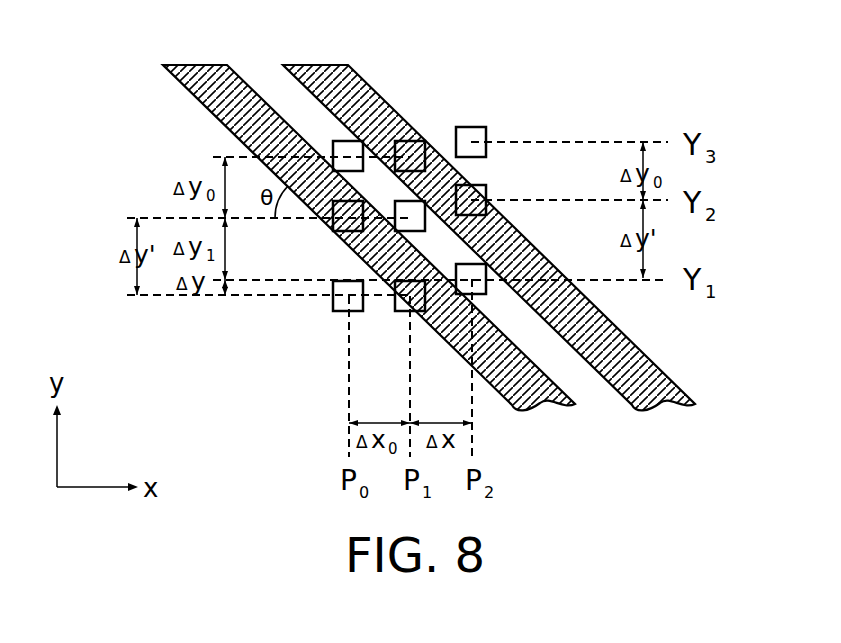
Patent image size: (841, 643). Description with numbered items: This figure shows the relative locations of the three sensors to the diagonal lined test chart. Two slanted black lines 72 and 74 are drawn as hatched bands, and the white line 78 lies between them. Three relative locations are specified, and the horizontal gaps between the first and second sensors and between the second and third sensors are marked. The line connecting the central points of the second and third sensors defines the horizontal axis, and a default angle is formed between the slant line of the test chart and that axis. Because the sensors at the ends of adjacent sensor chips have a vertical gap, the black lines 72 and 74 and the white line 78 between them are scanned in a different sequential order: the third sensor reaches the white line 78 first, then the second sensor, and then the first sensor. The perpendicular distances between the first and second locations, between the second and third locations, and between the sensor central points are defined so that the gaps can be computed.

The black line 72 is at (333, 65).
The black line 74 is at (200, 65).
The white line 78 is at (587, 395).